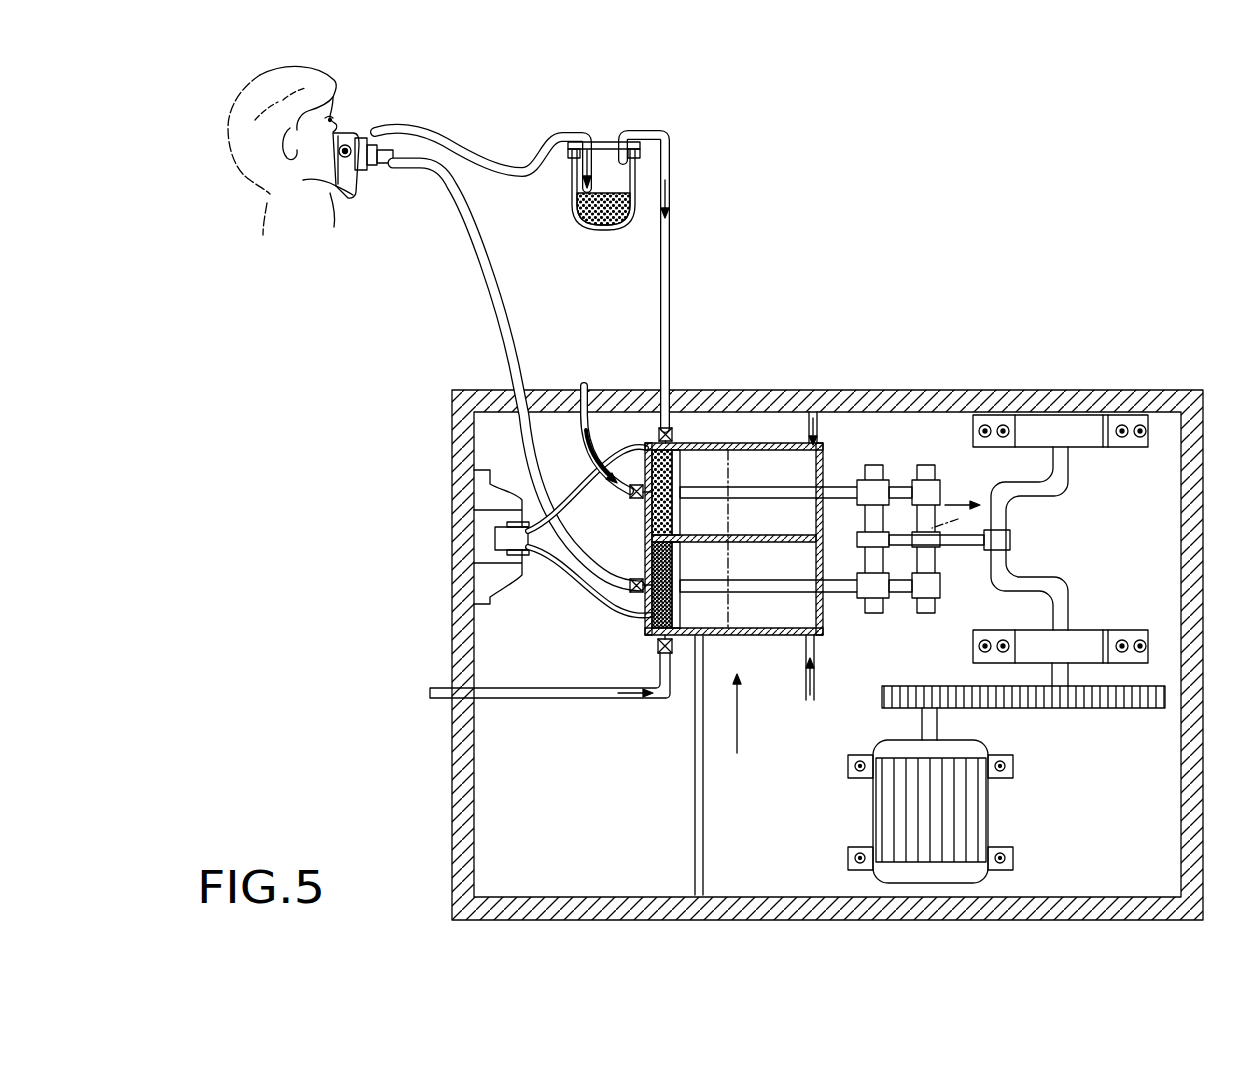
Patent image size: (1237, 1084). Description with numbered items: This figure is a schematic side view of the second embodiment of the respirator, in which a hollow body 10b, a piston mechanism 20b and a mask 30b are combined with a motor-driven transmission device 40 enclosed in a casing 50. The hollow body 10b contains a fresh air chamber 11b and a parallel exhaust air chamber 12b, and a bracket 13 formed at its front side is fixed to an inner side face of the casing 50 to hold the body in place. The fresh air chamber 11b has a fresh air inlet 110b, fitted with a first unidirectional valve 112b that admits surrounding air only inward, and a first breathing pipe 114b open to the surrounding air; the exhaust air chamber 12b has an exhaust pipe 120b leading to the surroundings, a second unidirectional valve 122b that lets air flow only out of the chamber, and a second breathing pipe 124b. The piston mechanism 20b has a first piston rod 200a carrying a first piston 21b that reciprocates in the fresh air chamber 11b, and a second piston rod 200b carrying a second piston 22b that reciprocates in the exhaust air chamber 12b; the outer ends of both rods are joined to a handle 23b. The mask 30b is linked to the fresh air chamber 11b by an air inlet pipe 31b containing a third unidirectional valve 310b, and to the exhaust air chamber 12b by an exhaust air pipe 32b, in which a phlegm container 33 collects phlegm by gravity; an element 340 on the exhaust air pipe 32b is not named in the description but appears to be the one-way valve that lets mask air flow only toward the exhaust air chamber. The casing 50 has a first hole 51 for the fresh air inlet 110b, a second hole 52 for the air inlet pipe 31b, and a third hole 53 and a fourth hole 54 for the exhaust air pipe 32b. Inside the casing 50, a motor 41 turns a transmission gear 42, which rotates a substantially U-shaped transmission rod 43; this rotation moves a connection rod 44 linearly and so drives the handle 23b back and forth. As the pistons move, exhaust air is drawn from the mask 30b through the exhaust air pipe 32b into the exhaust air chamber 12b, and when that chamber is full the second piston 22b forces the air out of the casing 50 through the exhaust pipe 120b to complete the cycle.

The hollow body 10b is at (747, 731).
The fresh air chamber 11b is at (781, 622).
The exhaust air chamber 12b is at (706, 452).
The bracket 13 is at (527, 578).
The piston mechanism 20b is at (891, 479).
The first piston 21b is at (680, 640).
The second piston 22b is at (690, 447).
The handle 23b is at (958, 519).
The mask 30b is at (360, 124).
The air inlet pipe 31b is at (471, 226).
The exhaust air pipe 32b is at (478, 150).
The phlegm container 33 is at (572, 182).
The transmission device 40 is at (1162, 606).
The motor 41 is at (988, 825).
The transmission gear 42 is at (1120, 708).
The transmission rod 43 is at (1048, 590).
The connection rod 44 is at (964, 547).
The casing 50 is at (1000, 390).
The first hole 51 is at (440, 697).
The second hole 52 is at (505, 388).
The third hole 53 is at (626, 446).
The fourth hole 54 is at (672, 402).
The fresh air inlet 110b is at (665, 672).
The first unidirectional valve 112b is at (658, 648).
The first breathing pipe 114b is at (816, 662).
The exhaust pipe 120b is at (569, 387).
The second unidirectional valve 122b is at (645, 452).
The second breathing pipe 124b is at (809, 415).
The first piston rod 200a is at (846, 594).
The second piston rod 200b is at (841, 486).
The third unidirectional valve 310b is at (590, 592).
The valve 340 is at (661, 428).